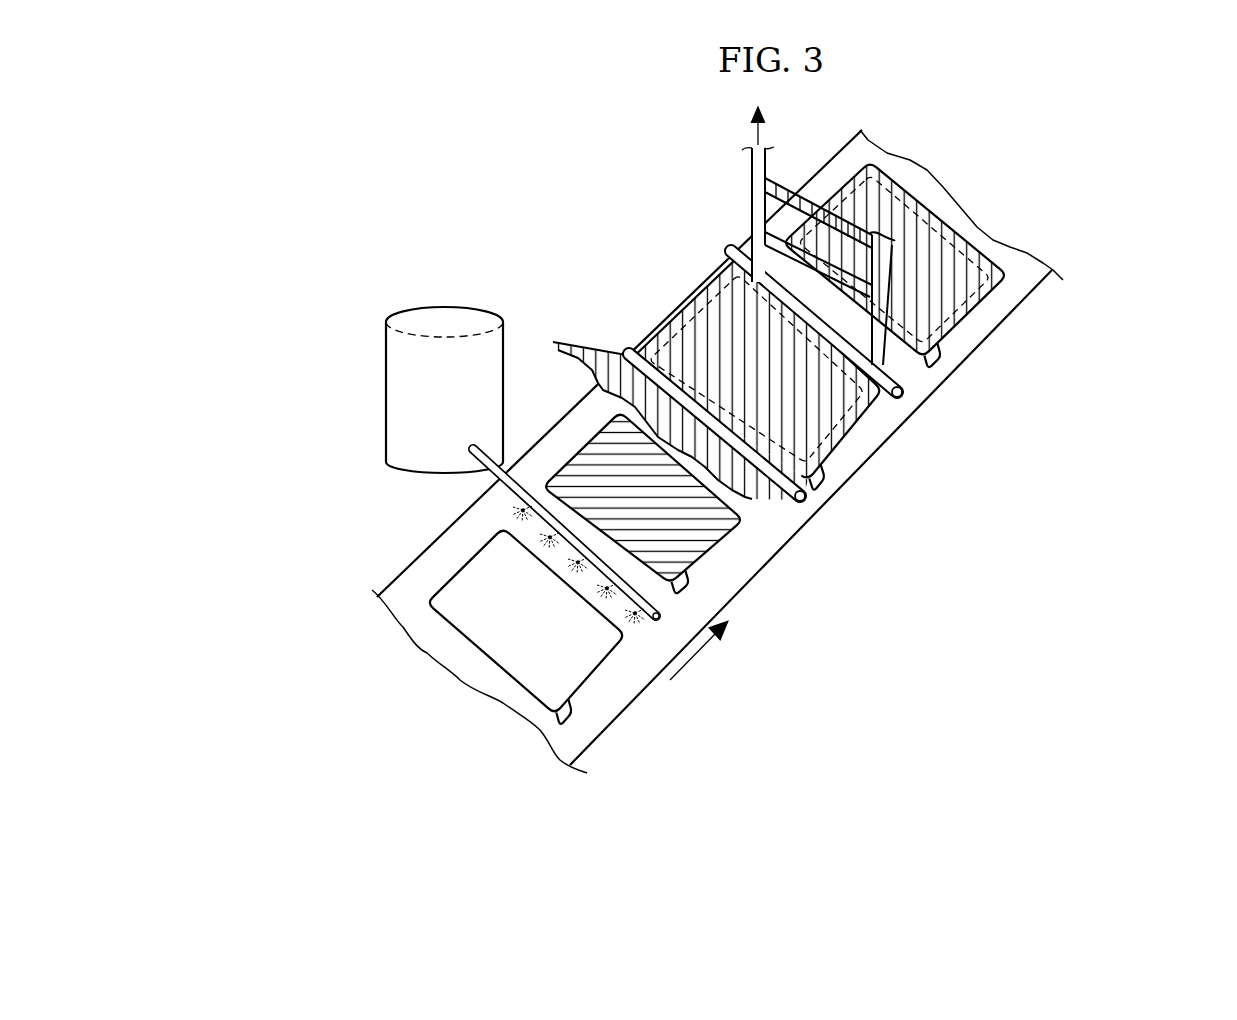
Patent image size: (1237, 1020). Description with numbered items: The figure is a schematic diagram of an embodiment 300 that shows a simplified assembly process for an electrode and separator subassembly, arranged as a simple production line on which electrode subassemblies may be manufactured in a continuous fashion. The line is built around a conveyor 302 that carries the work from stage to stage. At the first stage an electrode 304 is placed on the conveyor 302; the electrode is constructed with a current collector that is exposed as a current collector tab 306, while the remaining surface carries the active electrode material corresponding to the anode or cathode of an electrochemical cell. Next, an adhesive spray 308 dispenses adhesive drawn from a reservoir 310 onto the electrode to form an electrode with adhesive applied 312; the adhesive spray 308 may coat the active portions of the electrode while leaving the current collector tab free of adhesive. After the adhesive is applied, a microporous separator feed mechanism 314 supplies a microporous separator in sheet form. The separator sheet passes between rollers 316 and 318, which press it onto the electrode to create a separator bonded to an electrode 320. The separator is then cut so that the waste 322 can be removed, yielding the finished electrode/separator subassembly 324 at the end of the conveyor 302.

The embodiment 300 is at (697, 458).
The conveyor 302 is at (613, 688).
The electrode 304 is at (438, 669).
The current collector tab 306 is at (557, 717).
The adhesive spray 308 is at (385, 380).
The reservoir 310 is at (433, 537).
The electrode with adhesive applied 312 is at (700, 540).
The microporous separator feed mechanism 314 is at (543, 347).
The roller 316 is at (805, 500).
The roller 318 is at (835, 413).
The separator bonded to an electrode 320 is at (728, 251).
The waste 322 is at (752, 168).
The electrode/separator subassembly 324 is at (948, 298).